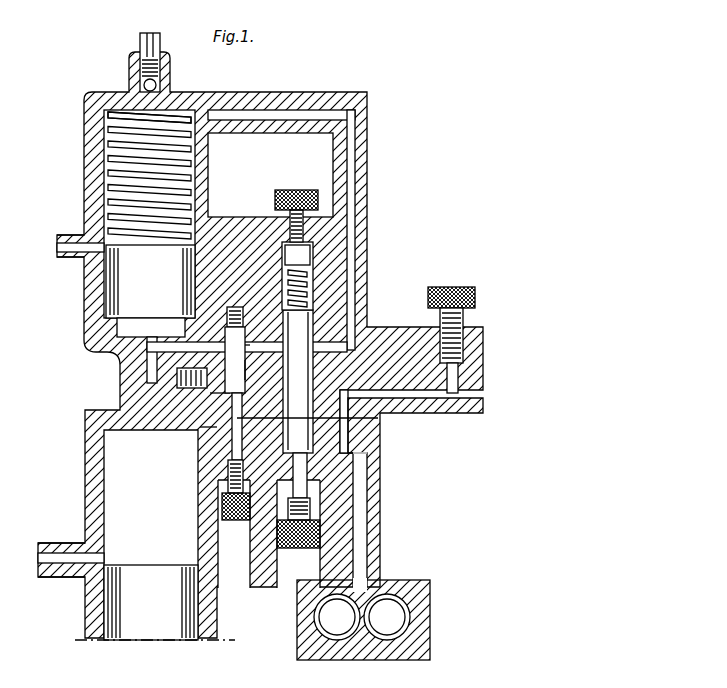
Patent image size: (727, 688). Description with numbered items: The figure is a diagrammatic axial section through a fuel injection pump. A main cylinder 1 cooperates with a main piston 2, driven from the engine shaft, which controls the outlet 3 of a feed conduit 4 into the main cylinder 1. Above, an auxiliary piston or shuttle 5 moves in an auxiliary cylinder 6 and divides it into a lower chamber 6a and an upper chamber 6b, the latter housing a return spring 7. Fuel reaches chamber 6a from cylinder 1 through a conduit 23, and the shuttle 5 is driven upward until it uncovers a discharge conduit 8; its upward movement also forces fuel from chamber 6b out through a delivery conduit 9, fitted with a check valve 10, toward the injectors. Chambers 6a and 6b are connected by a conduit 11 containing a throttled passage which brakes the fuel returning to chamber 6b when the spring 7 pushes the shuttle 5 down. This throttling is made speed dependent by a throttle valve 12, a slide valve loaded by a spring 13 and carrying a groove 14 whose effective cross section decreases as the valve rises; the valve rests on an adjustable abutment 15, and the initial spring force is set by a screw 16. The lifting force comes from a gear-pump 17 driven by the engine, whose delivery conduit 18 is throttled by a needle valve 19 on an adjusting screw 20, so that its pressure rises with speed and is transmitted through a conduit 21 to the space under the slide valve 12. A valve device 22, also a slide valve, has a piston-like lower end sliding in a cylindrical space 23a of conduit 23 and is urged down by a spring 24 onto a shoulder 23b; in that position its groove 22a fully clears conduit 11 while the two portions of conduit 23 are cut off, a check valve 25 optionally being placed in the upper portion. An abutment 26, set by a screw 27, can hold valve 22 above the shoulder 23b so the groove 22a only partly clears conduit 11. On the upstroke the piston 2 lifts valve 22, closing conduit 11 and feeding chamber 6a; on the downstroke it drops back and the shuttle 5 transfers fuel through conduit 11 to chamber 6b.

The main cylinder 1 is at (113, 443).
The main piston 2 is at (173, 595).
The outlet 3 is at (103, 558).
The feed conduit 4 is at (57, 563).
The auxiliary piston or shuttle 5 is at (120, 273).
The auxiliary cylinder 6 is at (110, 182).
The chamber 6a is at (130, 323).
The chamber 6b is at (117, 137).
The return spring 7 is at (113, 160).
The discharge conduit 8 is at (78, 250).
The delivery conduit 9 is at (153, 43).
The check valve 10 is at (153, 85).
The conduit 11 is at (354, 147).
The throttle valve 12 is at (313, 317).
The spring 13 is at (313, 272).
The groove 14 is at (332, 342).
The adjustable abutment 15 is at (300, 473).
The screw 16 is at (300, 190).
The gear-pump 17 is at (387, 600).
The delivery conduit 18 is at (363, 503).
The needle valve 19 is at (460, 375).
The adjusting screw 20 is at (465, 312).
The conduit 21 is at (367, 448).
The valve device 22 is at (220, 393).
The groove 22a is at (240, 345).
The conduit 23 is at (153, 345).
The cylindrical space 23a is at (250, 368).
The shoulder 23b is at (200, 427).
The spring 24 is at (230, 307).
The check valve 25 is at (217, 372).
The abutment 26 is at (318, 425).
The screw 27 is at (234, 524).